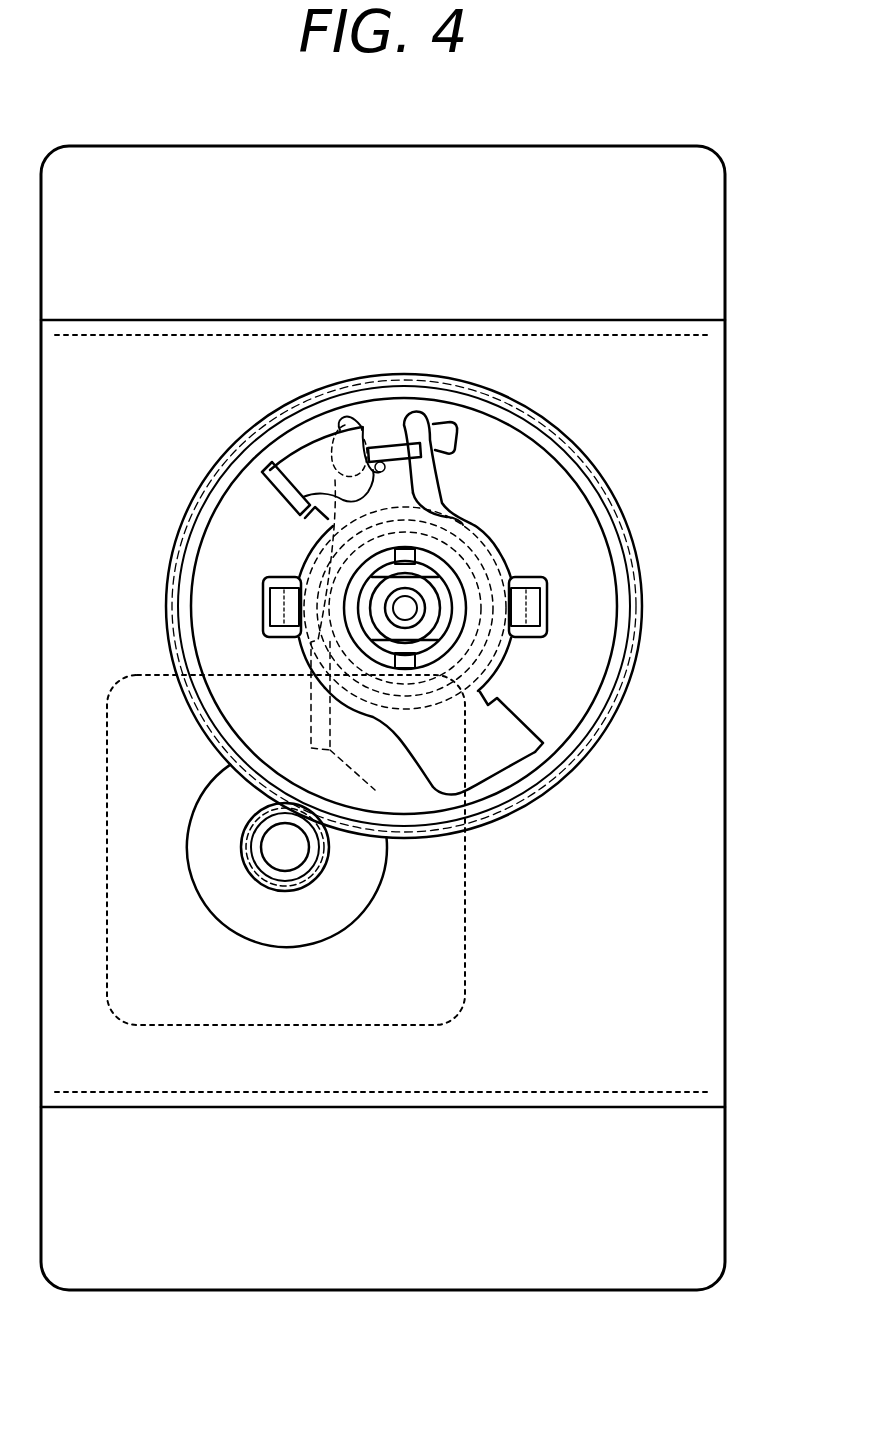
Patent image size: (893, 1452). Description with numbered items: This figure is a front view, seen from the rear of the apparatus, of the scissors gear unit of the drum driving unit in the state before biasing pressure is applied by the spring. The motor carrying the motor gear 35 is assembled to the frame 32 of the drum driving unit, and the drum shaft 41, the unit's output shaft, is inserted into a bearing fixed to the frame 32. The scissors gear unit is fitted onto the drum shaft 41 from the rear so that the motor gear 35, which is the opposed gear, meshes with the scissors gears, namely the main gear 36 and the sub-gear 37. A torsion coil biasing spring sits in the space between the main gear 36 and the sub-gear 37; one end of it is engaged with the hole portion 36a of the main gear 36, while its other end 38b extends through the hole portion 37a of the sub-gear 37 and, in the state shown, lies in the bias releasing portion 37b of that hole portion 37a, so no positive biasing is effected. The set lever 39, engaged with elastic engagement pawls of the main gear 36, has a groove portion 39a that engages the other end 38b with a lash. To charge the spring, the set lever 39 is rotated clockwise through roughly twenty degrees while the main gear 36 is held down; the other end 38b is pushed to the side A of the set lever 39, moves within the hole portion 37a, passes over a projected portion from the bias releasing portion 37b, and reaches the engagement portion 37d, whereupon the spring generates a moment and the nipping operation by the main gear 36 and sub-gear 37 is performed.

The frame 32 is at (660, 1000).
The motor gear 35 is at (250, 867).
The main gear 36 is at (373, 650).
The hole portion 36a is at (369, 647).
The sub-gear 37 is at (590, 623).
The hole portion 37a is at (440, 422).
The bias releasing portion 37b is at (373, 420).
The engagement portion 37d is at (433, 457).
The other end of the biasing spring 38b is at (463, 523).
The set lever 39 is at (477, 747).
The groove portion 39a is at (293, 503).
The drum shaft 41 is at (380, 615).
The side of the set lever A is at (340, 430).